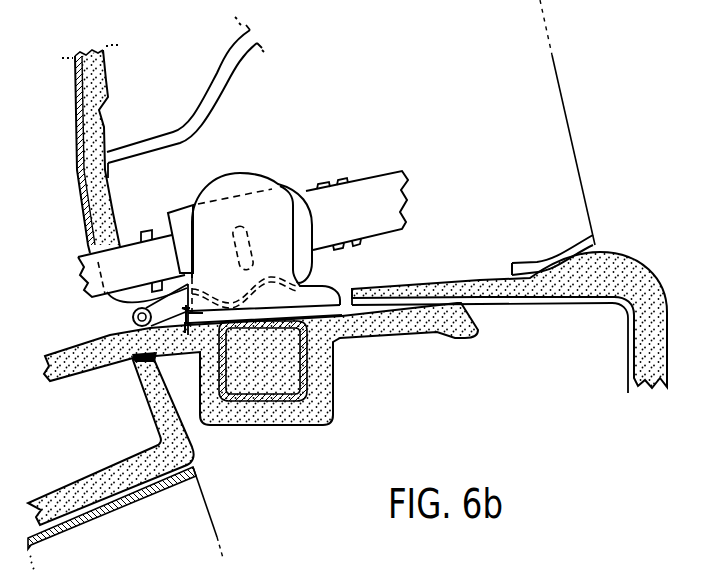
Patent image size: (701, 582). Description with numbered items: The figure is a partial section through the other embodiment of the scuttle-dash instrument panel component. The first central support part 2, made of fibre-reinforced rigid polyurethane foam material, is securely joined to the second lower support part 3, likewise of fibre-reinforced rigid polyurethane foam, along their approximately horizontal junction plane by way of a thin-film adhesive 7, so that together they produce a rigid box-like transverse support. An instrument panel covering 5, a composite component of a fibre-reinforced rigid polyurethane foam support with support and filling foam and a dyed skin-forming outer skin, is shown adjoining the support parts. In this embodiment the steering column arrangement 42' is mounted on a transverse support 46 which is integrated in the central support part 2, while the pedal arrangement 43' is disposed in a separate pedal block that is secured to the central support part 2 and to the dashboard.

The instrument panel covering 5 is at (92, 80).
The steering column arrangement 42' is at (243, 229).
The first central support part 2 is at (462, 338).
The thin-film adhesive 7 is at (132, 362).
The second lower support part 3 is at (157, 418).
The transverse support 46 is at (310, 388).
The pedal arrangement 43' is at (144, 518).